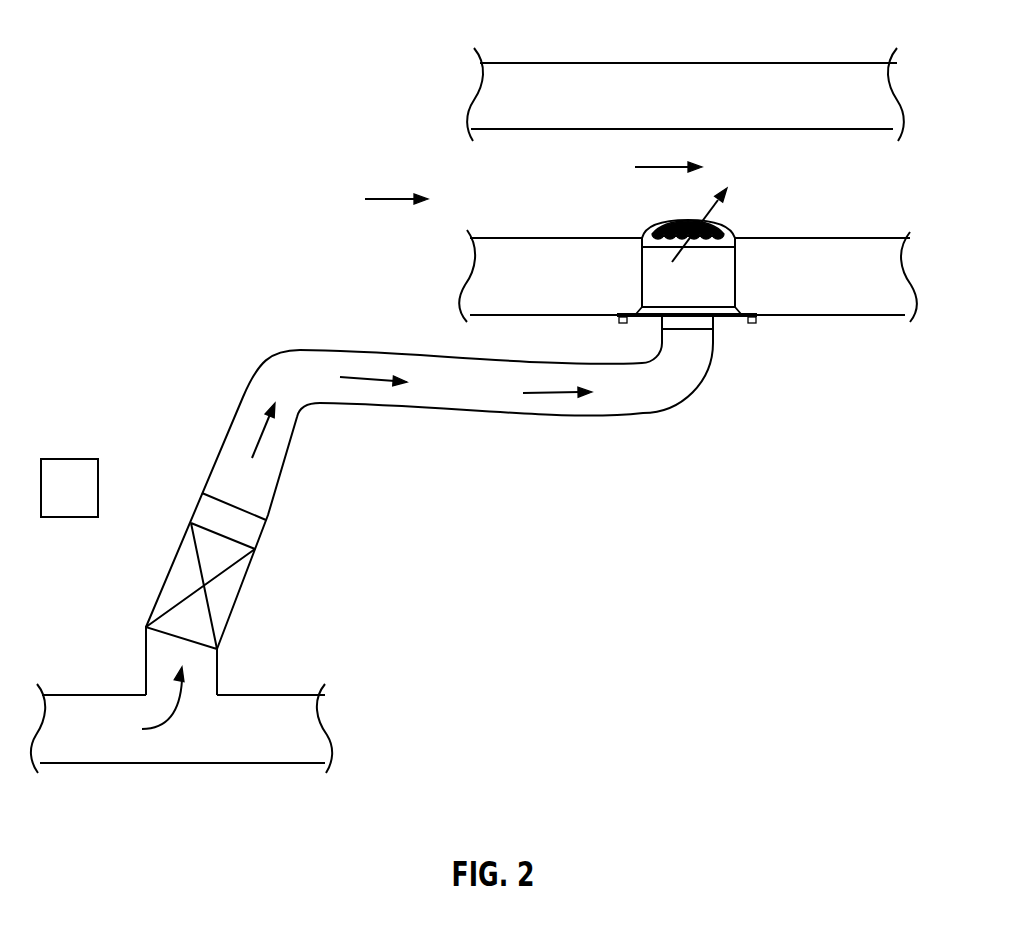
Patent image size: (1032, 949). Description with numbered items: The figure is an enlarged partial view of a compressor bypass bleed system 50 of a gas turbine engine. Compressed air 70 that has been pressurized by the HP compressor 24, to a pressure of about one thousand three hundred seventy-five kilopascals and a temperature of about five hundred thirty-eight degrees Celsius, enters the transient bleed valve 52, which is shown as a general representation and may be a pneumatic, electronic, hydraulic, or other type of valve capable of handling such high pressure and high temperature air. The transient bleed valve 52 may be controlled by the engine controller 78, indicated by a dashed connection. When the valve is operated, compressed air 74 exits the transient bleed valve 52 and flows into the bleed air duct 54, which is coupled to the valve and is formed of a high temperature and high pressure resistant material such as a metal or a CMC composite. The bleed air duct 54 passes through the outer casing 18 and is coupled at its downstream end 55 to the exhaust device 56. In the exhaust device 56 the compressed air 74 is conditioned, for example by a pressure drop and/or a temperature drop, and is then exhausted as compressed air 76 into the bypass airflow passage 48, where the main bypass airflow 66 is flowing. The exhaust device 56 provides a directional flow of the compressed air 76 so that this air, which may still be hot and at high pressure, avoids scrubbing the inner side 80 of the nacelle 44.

The outer casing 18 is at (825, 236).
The HP compressor 24 is at (275, 708).
The nacelle 44 is at (782, 72).
The bypass airflow passage 48 is at (540, 183).
The compressor bypass bleed system 50 is at (219, 200).
The transient bleed valve 52 is at (176, 583).
The bleed air duct 54 is at (522, 423).
The downstream end 55 is at (728, 327).
The exhaust device 56 is at (636, 286).
The airflow 66 is at (398, 199).
The compressed air 70 is at (157, 728).
The compressed air 74 is at (363, 379).
The compressed air 76 is at (672, 260).
The engine controller 78 is at (177, 548).
The inner side 80 is at (800, 135).